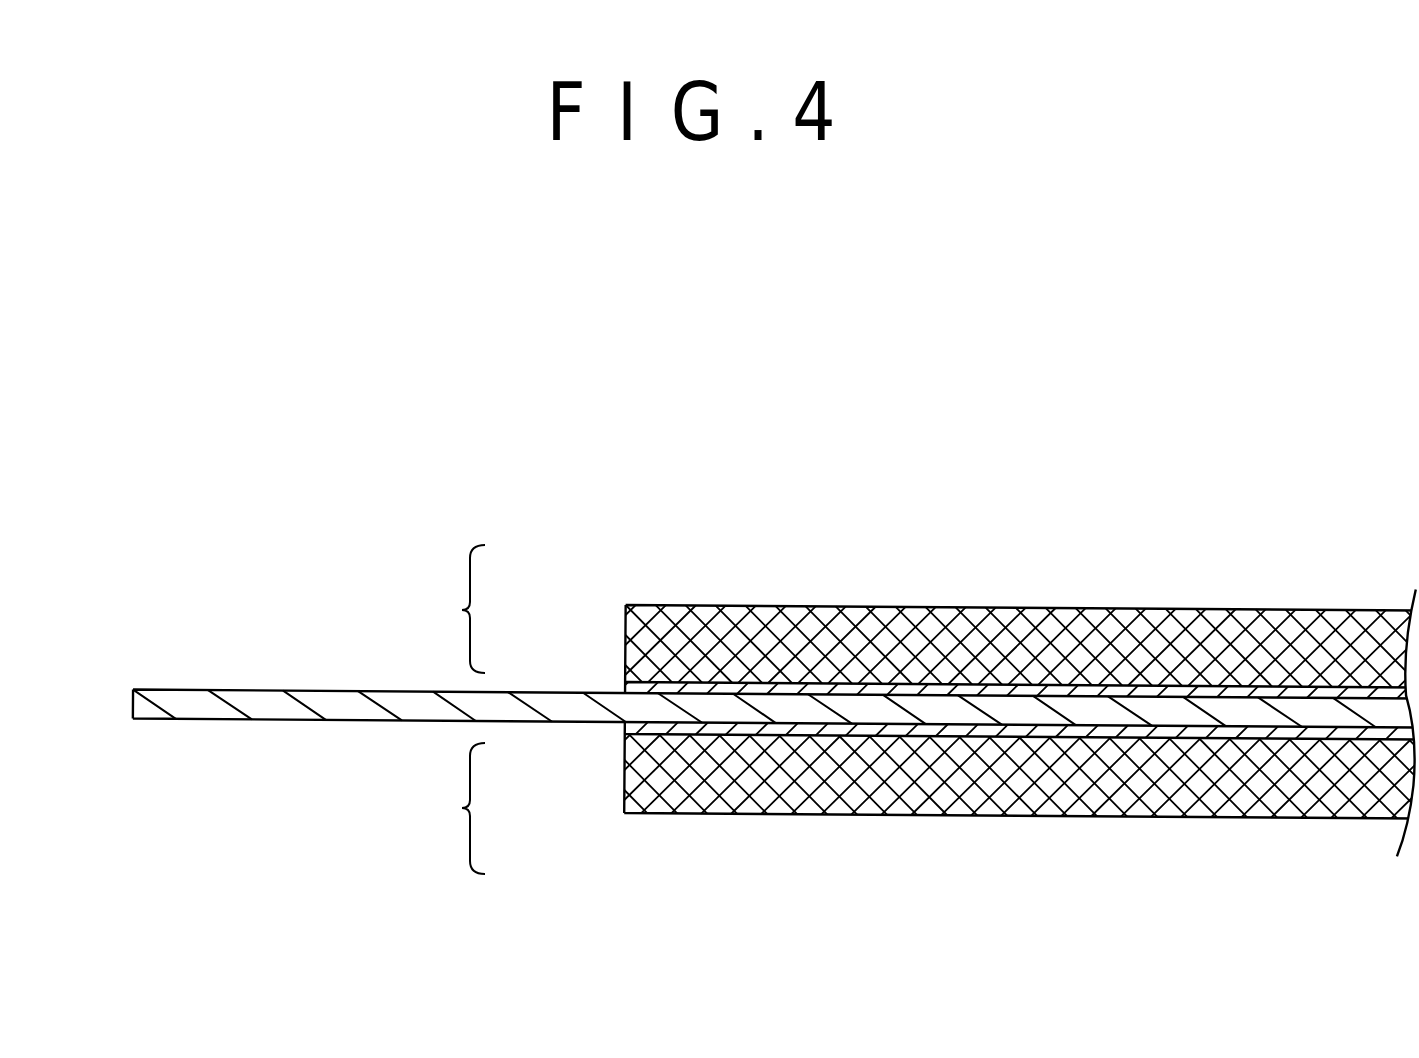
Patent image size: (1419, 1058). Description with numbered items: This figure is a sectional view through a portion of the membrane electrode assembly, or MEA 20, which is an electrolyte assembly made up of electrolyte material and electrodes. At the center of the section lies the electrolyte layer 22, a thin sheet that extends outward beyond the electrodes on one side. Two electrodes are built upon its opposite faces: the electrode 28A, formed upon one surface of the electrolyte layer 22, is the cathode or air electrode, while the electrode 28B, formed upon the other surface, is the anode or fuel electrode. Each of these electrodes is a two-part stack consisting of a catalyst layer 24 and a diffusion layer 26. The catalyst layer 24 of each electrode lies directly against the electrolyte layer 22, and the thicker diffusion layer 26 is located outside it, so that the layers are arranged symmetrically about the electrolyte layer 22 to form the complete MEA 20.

The membrane electrode assembly 20 is at (1182, 588).
The electrolyte layer 22 is at (182, 697).
The catalyst layer 24 is at (625, 688).
The diffusion layer 26 is at (625, 622).
The cathode electrode 28A is at (434, 609).
The anode electrode 28B is at (434, 808).